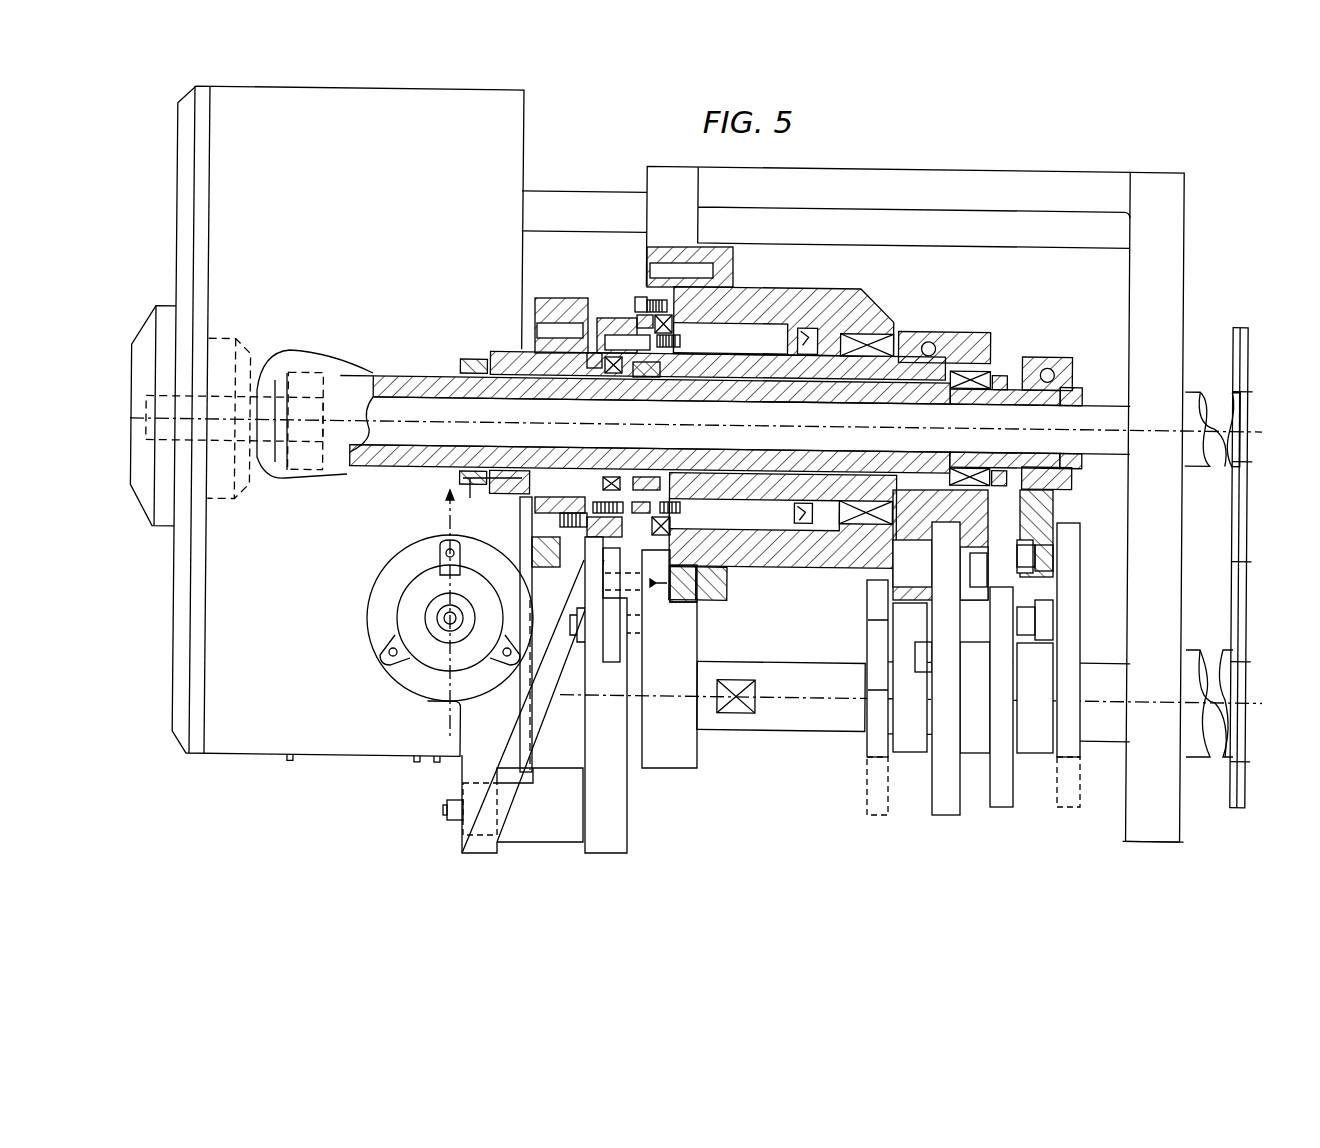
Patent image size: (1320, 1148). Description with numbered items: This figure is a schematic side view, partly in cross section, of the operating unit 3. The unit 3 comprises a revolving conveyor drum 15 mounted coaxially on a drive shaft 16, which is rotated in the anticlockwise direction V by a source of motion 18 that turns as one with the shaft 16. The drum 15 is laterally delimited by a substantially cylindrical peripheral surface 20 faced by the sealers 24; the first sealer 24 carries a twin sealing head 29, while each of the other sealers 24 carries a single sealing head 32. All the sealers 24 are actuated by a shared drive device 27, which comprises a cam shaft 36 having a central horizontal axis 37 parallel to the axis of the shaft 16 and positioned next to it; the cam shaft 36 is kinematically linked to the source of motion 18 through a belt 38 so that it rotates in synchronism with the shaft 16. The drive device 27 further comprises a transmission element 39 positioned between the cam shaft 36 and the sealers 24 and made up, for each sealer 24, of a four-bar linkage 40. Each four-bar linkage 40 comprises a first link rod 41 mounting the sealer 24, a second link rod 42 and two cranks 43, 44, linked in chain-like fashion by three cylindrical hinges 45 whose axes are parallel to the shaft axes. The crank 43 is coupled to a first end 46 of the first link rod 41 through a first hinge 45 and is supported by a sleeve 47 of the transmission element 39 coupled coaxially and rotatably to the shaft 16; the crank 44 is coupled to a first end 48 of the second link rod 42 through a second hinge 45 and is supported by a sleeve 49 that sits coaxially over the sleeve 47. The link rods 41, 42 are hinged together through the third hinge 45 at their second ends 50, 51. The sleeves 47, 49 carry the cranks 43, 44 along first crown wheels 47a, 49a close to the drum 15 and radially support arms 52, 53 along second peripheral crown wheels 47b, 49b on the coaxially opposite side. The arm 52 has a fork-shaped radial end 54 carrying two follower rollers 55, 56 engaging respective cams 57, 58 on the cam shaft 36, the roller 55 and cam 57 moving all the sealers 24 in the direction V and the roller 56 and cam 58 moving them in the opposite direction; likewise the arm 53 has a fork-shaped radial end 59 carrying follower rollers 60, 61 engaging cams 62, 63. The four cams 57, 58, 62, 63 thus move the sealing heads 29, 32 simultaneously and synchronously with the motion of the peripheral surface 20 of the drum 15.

The operating unit 3 is at (340, 773).
The revolving conveyor drum 15 is at (232, 740).
The drive shaft 16 is at (825, 420).
The source of motion 18 is at (1128, 413).
The peripheral surface 20 is at (280, 757).
The sealer 24 is at (435, 610).
The drive device 27 is at (850, 765).
The twin sealing head 29 is at (437, 617).
The sealing head 32 is at (450, 615).
The cam shaft 36 is at (767, 718).
The central horizontal axis 37 is at (793, 700).
The belt 38 is at (1242, 810).
The transmission element 39 is at (1038, 348).
The four-bar linkage 40 is at (422, 785).
The first link rod 41 is at (498, 827).
The second link rod 42 is at (550, 575).
The crank 43 is at (462, 793).
The crank 44 is at (458, 490).
The cylindrical hinge 45 is at (435, 812).
The first end 46 is at (618, 820).
The sleeve 47 is at (427, 383).
The first crown wheel 47a is at (547, 295).
The second peripheral crown wheel 47b is at (1103, 420).
The first end 48 is at (550, 550).
The sleeve 49 is at (770, 520).
The first crown wheel 49a is at (617, 317).
The second peripheral crown wheel 49b is at (907, 327).
The second end 50 is at (547, 712).
The second end 51 is at (600, 640).
The arm 52 is at (1020, 400).
The arm 53 is at (968, 452).
The radial end 54 is at (1068, 700).
The follower roller 55 is at (1158, 838).
The follower roller 56 is at (1040, 640).
The cam 57 is at (1067, 555).
The cam 58 is at (1035, 700).
The radial end 59 is at (880, 590).
The follower roller 60 is at (905, 720).
The follower roller 61 is at (997, 773).
The cam 62 is at (877, 700).
The cam 63 is at (950, 700).
The direction of rotation V is at (417, 575).